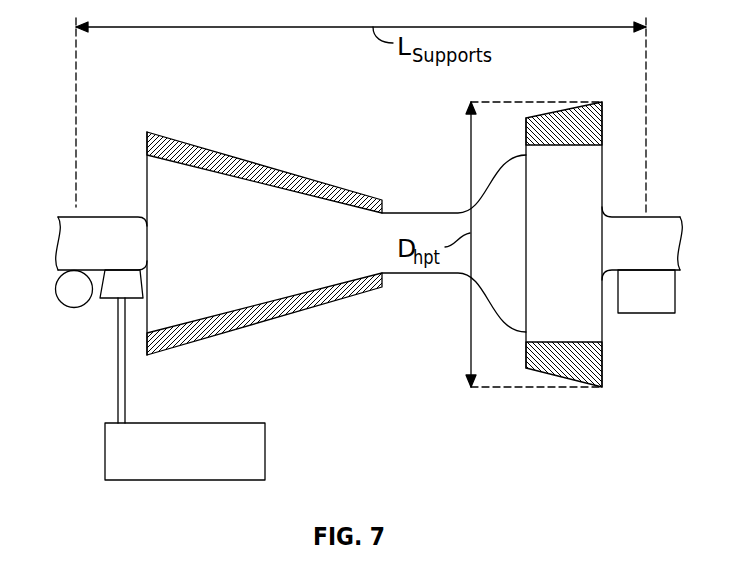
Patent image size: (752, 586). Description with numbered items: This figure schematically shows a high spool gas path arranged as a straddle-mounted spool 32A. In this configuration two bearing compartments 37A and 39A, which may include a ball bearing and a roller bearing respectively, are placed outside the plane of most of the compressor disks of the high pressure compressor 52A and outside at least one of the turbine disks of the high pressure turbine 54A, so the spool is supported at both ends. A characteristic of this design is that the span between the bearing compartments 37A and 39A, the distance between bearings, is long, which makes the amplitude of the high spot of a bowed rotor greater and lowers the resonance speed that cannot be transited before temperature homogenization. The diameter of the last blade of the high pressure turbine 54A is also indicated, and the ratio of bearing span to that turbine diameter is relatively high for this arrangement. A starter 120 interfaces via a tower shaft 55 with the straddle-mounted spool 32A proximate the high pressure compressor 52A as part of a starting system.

The bearing compartment 37A is at (72, 307).
The bearing compartment 39A is at (647, 313).
The high pressure compressor 52A is at (275, 290).
The high pressure turbine 54A is at (526, 300).
The straddle-mounted spool 32A is at (450, 198).
The tower shaft 55 is at (125, 385).
The starter 120 is at (266, 450).